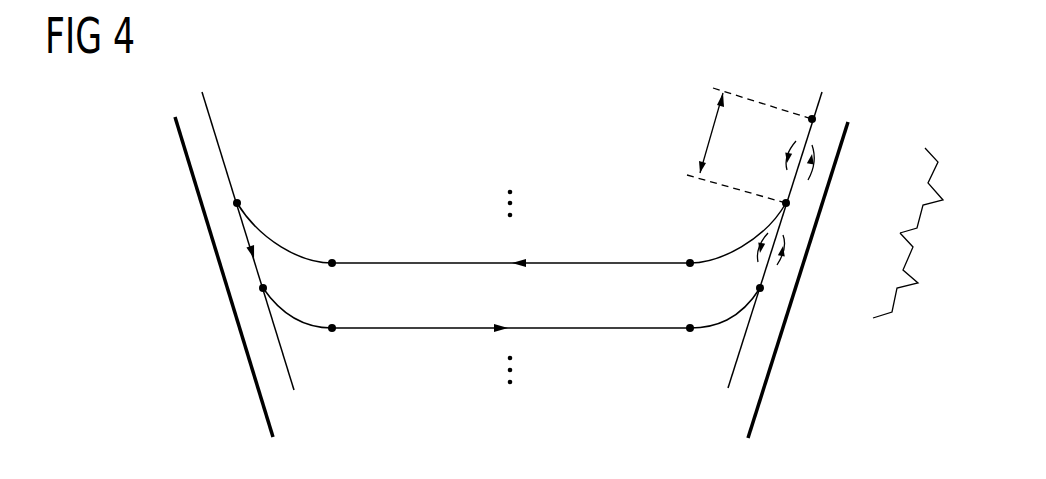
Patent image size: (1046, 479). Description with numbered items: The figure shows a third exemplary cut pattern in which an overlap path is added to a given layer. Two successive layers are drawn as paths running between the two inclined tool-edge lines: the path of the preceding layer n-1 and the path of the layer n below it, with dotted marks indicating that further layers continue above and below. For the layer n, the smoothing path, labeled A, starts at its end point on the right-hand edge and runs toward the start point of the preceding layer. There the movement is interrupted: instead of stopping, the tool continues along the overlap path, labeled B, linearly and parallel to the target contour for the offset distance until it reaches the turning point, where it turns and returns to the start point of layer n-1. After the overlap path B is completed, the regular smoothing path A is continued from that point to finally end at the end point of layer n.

The (n-1)-th layer path n-1 is at (511, 247).
The n-th layer path n is at (511, 312).
The smoothing path A is at (903, 275).
The overlap path B is at (930, 190).